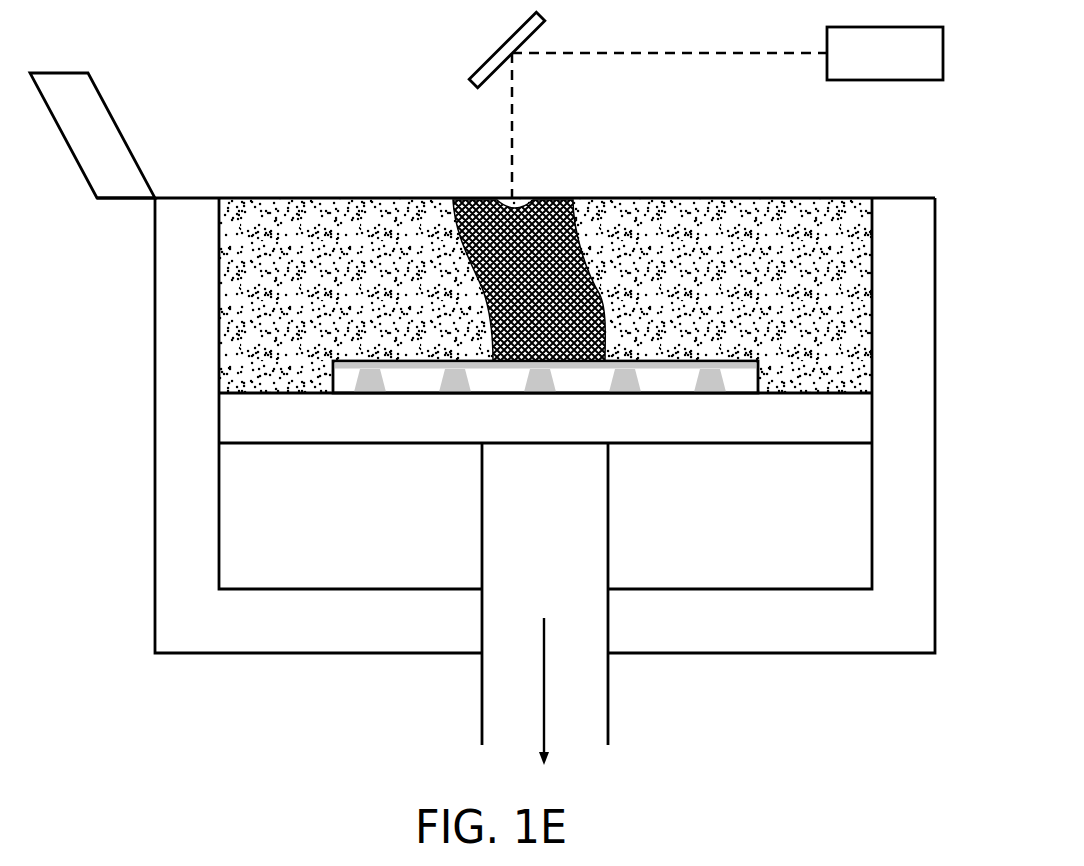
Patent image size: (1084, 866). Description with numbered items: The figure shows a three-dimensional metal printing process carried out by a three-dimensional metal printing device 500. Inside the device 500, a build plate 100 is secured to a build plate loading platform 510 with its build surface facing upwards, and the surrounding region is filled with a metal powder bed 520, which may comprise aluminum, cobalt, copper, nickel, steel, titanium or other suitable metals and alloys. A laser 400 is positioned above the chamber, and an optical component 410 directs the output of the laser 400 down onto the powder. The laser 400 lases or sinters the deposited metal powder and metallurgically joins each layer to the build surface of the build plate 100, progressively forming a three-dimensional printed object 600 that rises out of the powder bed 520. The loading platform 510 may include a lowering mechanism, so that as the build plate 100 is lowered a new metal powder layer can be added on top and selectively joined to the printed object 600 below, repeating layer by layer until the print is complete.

The 3D metal printing device 500 is at (214, 70).
The build plate loading platform 510 is at (277, 432).
The metal powder bed 520 is at (275, 329).
The 3D printed object 600 is at (564, 230).
The build plate 100 is at (665, 381).
The optical component 410 is at (480, 36).
The laser 400 is at (882, 94).